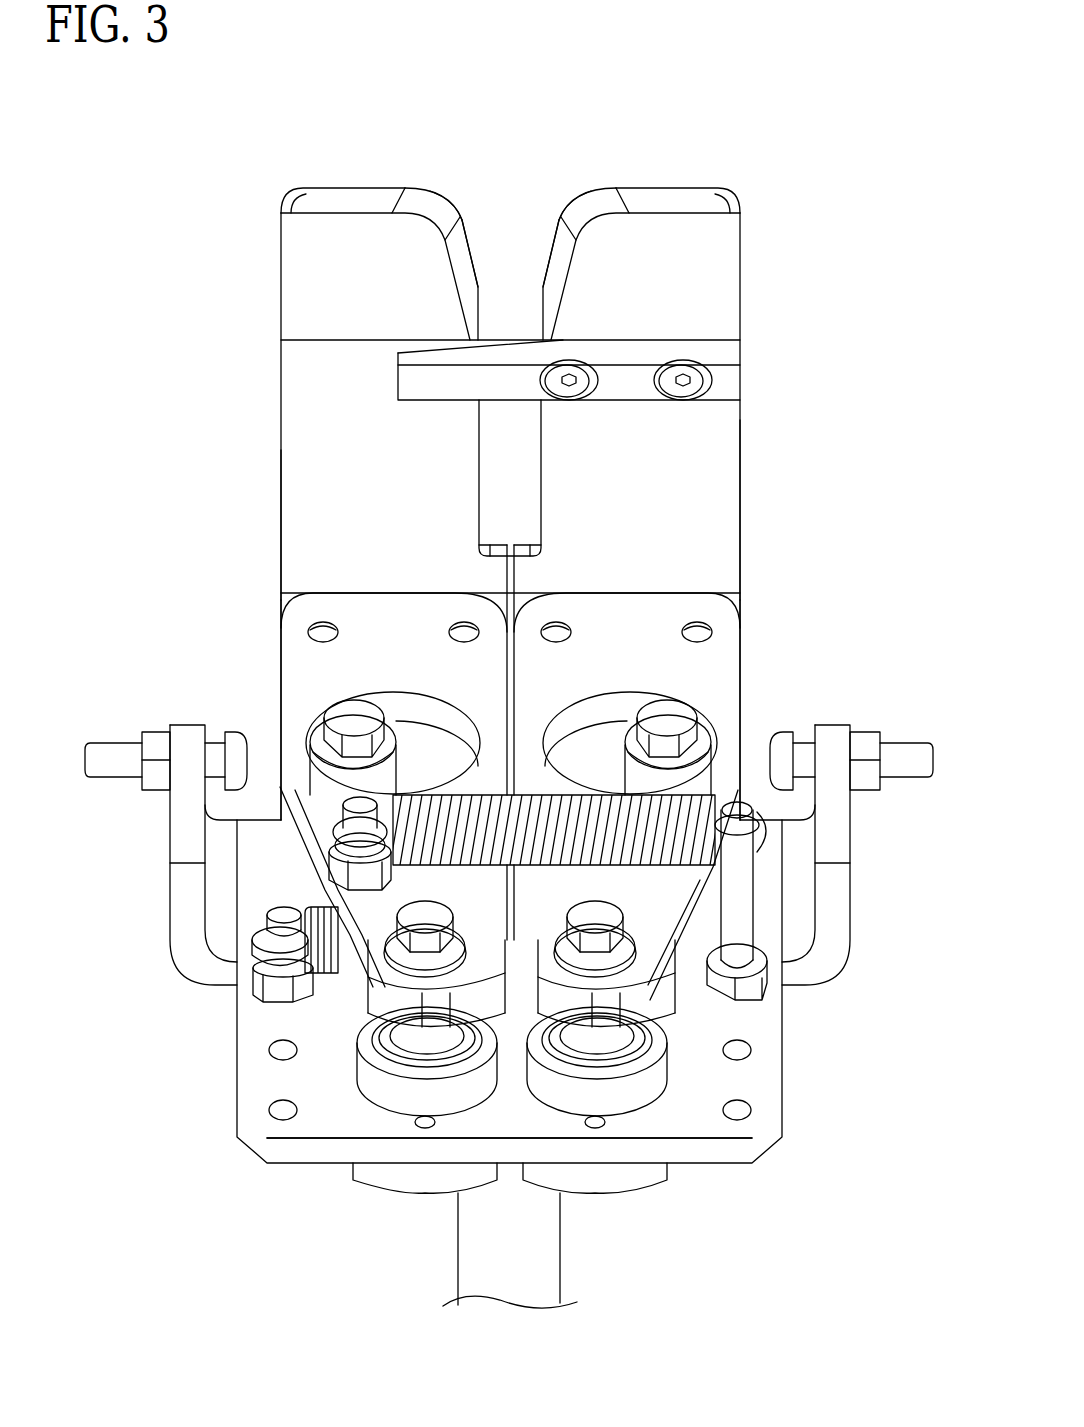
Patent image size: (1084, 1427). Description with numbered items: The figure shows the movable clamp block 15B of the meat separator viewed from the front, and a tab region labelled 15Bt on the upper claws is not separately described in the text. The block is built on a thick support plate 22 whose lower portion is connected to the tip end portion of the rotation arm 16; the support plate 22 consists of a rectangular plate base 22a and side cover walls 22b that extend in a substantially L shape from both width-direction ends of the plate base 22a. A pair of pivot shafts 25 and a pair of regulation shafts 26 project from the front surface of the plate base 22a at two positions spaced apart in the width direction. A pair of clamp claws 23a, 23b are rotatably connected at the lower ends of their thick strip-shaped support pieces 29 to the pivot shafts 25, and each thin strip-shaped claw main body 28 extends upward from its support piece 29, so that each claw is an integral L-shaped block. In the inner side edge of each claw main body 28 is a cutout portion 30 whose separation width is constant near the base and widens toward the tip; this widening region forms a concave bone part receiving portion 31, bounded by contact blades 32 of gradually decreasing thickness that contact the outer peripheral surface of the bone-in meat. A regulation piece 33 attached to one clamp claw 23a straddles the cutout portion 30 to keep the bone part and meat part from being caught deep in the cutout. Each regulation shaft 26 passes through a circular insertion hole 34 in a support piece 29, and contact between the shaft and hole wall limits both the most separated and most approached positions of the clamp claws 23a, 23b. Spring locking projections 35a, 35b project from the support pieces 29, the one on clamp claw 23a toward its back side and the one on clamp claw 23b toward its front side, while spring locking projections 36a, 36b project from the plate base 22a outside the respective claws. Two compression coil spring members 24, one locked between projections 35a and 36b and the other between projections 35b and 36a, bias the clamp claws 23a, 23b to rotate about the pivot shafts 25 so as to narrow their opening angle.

The movable clamp block 15B is at (784, 462).
The tab portion 15Bt is at (510, 253).
The rotation arm 16 is at (547, 1247).
The support plate 22 is at (798, 1077).
The plate base 22a is at (340, 1110).
The side cover wall 22b is at (172, 905).
The clamp claw 23a is at (758, 560).
The clamp claw 23b is at (264, 560).
The spring member 24 is at (338, 988).
The pivot shaft 25 is at (430, 925).
The regulation shaft 26 is at (320, 768).
The claw main body 28 is at (281, 452).
The support piece 29 is at (285, 663).
The cutout portion 30 is at (490, 512).
The bone part receiving portion 31 is at (470, 262).
The contact blade 32 is at (442, 275).
The regulation piece 33 is at (533, 350).
The insertion hole 34 is at (330, 793).
The spring locking projection 35a is at (650, 853).
The spring locking projection 35b is at (357, 820).
The spring locking projection 36a is at (740, 900).
The spring locking projection 36b is at (268, 923).